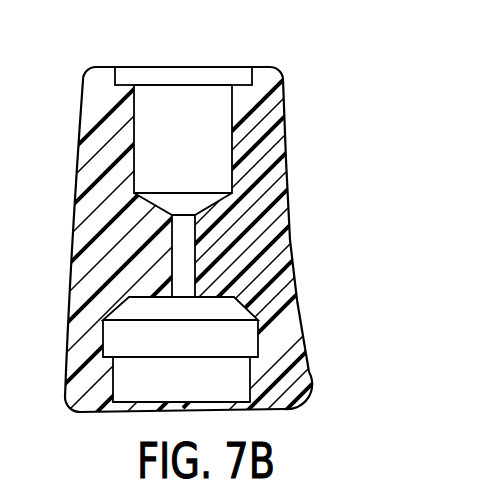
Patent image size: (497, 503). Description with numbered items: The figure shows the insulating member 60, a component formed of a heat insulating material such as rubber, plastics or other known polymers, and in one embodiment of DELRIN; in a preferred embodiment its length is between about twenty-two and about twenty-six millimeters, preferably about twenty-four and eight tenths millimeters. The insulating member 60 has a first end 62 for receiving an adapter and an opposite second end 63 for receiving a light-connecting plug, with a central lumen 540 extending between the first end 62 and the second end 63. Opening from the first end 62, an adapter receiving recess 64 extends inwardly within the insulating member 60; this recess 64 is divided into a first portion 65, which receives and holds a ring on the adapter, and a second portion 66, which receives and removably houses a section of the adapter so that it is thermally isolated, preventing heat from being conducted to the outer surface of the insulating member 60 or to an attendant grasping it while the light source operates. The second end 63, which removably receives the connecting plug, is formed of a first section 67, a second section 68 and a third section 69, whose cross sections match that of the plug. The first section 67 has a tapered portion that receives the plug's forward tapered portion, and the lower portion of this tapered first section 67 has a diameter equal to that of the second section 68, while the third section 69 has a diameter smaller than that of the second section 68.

The insulating member 60 is at (208, 240).
The first end 62 is at (104, 67).
The second end 63 is at (288, 404).
The adapter receiving recess 64 is at (207, 148).
The first portion 65 is at (222, 78).
The second portion 66 is at (185, 97).
The first section 67 is at (247, 342).
The second section 68 is at (237, 378).
The third section 69 is at (278, 390).
The central lumen 540 is at (193, 242).